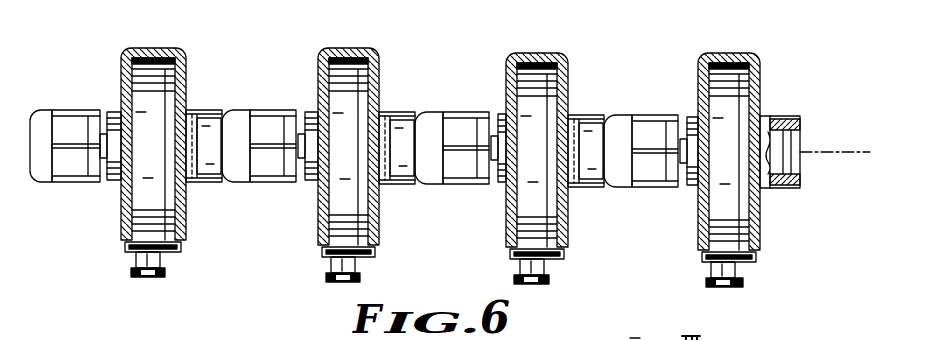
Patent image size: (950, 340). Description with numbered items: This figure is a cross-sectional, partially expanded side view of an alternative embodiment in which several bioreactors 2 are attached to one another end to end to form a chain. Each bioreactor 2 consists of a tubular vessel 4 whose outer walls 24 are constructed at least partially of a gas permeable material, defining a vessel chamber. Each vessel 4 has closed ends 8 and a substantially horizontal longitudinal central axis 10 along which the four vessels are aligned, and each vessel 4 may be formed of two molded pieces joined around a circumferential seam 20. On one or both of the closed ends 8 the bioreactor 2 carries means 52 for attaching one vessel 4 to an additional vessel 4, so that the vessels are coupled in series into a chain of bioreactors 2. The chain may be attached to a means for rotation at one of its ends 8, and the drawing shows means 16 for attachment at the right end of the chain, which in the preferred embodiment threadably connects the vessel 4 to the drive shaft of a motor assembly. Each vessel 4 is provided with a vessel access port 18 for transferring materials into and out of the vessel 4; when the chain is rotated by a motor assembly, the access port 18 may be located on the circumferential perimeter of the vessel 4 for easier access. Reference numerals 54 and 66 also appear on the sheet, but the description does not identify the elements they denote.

The bioreactor 2 is at (190, 32).
The tubular vessel 4 is at (732, 88).
The closed ends 8 is at (759, 80).
The longitudinal central axis 10 is at (823, 152).
The means for attachment 16 is at (810, 116).
The vessel access port 18 is at (160, 279).
The circumferential seam 20 is at (750, 234).
The outer walls 24 is at (761, 222).
The means for attaching one vessel to an additional vessel 52 is at (603, 189).
The coupling member 54 is at (669, 339).
The connecting element 66 is at (704, 338).